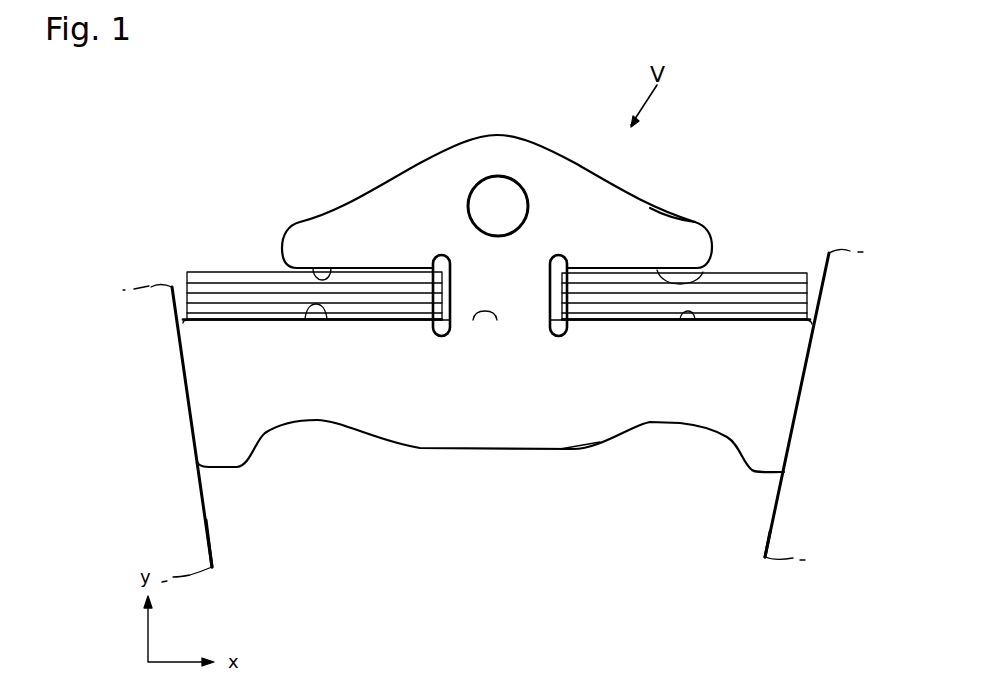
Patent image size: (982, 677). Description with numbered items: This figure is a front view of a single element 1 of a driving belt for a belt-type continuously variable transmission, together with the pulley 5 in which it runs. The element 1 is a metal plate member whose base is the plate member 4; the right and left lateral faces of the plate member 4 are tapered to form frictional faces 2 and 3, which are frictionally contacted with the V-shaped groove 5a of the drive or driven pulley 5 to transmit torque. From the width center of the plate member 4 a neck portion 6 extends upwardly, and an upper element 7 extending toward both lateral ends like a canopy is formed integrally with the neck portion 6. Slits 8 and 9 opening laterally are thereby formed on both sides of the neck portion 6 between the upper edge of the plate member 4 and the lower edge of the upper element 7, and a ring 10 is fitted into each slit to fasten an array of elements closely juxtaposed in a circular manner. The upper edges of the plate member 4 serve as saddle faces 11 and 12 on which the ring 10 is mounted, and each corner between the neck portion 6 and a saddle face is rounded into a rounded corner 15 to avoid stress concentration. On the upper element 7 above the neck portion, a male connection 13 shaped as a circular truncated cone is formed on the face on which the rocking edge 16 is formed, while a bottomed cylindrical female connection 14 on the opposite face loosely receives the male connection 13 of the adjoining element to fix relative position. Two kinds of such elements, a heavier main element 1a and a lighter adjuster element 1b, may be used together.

The element 1 is at (462, 503).
The main element 1a is at (316, 321).
The adjuster element 1b is at (681, 322).
The frictional face 2 is at (790, 444).
The frictional face 3 is at (188, 415).
The plate member 4 is at (595, 431).
The pulley 5 is at (160, 332).
The V-shaped groove 5a is at (208, 520).
The neck portion 6 is at (540, 293).
The upper element 7 is at (555, 182).
The slit 8 is at (703, 273).
The slit 9 is at (313, 268).
The ring 10 is at (248, 295).
The saddle face 11 is at (326, 319).
The saddle face 12 is at (693, 316).
The male connection 13 is at (480, 182).
The female connection 14 is at (498, 206).
The rounded corner 15 is at (433, 338).
The rocking edge 16 is at (497, 330).